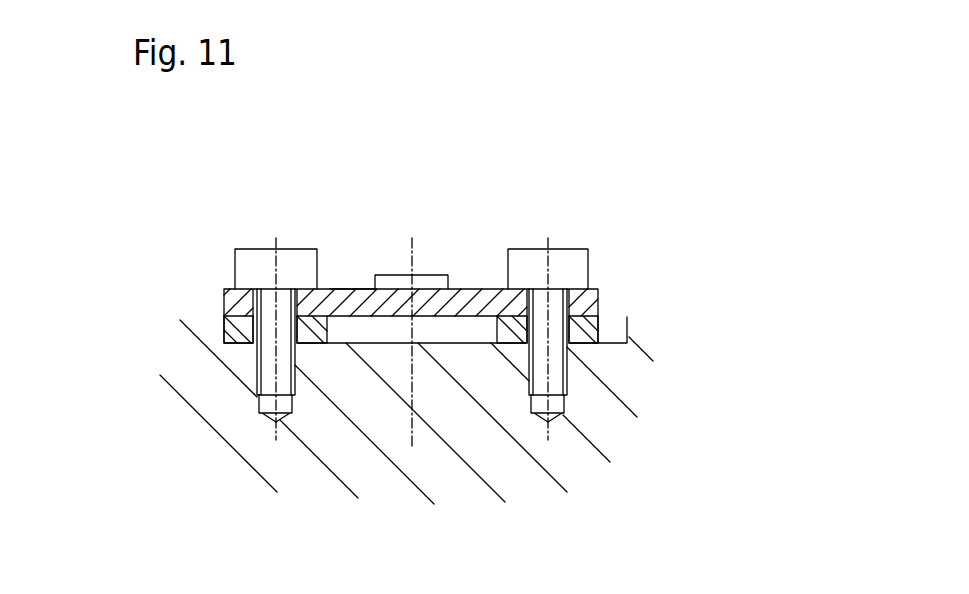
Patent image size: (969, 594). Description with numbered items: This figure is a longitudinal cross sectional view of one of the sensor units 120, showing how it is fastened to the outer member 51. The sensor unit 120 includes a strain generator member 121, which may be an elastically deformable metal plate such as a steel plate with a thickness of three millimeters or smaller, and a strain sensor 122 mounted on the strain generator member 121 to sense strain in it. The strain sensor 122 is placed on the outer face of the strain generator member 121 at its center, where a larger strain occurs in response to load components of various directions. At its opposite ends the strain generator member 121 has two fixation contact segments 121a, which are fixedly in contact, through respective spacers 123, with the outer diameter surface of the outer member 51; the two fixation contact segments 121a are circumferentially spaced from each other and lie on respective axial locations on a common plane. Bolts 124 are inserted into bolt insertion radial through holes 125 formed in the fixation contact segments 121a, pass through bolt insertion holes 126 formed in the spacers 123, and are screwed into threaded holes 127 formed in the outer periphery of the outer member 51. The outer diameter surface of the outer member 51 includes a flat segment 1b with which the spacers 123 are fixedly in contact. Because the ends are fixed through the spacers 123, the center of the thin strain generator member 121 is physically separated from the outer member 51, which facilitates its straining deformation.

The outer member 51 is at (675, 368).
The sensor unit 120 is at (302, 200).
The strain generator member 121 is at (485, 288).
The fixation contact segment 121a is at (312, 318).
The flat segment 1b is at (373, 288).
The strain sensor 122 is at (422, 273).
The spacer 123 is at (224, 330).
The bolt 124 is at (252, 248).
The bolt insertion radial through hole 125 is at (258, 316).
The bolt insertion hole 126 is at (259, 335).
The threaded hole 127 is at (290, 372).